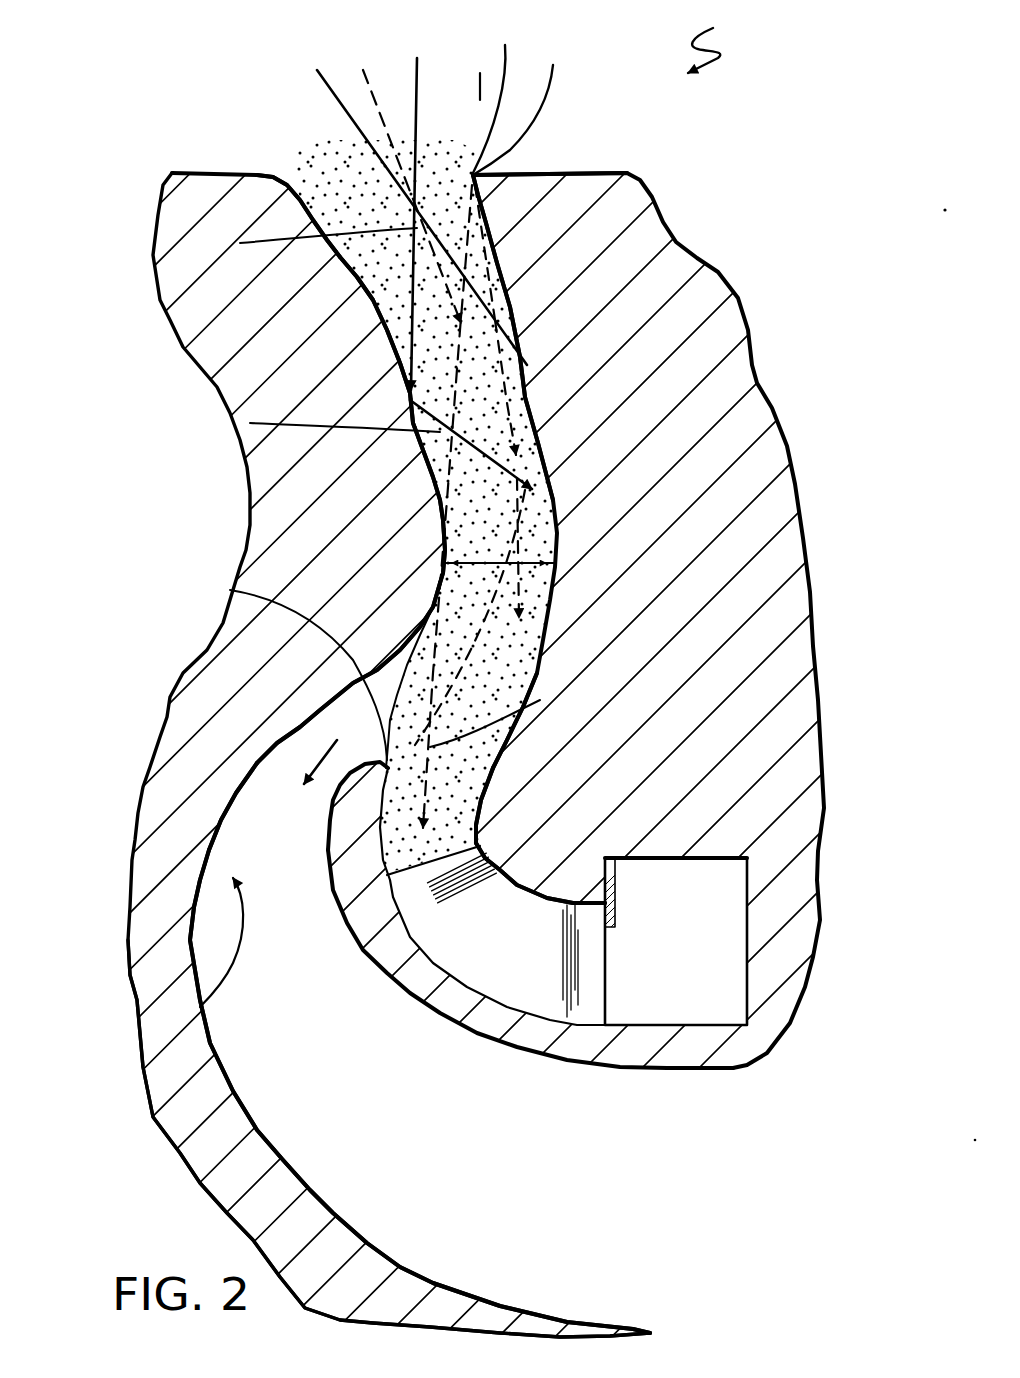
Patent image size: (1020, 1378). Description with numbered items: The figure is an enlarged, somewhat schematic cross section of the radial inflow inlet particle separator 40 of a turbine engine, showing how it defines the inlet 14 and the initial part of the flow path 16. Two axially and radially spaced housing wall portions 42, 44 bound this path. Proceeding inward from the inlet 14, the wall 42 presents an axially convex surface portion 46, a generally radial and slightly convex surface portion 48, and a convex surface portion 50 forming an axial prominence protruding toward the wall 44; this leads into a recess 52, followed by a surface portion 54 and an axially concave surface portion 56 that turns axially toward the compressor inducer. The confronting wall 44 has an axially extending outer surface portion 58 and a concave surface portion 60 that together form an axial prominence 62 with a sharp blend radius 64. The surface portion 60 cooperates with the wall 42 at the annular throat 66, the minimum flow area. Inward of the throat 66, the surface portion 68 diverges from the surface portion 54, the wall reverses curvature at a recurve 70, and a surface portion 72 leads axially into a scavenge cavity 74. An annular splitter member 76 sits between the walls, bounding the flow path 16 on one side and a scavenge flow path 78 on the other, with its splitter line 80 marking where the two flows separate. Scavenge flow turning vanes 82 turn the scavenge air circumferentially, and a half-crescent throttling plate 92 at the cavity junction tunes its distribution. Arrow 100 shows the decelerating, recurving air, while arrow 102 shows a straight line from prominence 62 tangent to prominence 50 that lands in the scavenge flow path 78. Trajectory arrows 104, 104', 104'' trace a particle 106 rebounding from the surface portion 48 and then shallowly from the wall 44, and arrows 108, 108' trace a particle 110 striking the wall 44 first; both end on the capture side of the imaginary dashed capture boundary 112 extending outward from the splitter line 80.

The inlet 14 is at (328, 132).
The flow path 16 is at (466, 1143).
The inlet particle separator 40 is at (725, 39).
The wall portion 42 is at (183, 184).
The wall portion 44 is at (573, 193).
The axially convex surface portion 46 is at (282, 186).
The slightly axially convex surface portion 48 is at (373, 302).
The axially convex surface portion 50 is at (443, 533).
The recess 52 is at (200, 1003).
The surface portion 54 is at (260, 765).
The axially concave surface portion 56 is at (205, 856).
The axially extending radially outwardly disposed surface portion 58 is at (550, 173).
The concave or conical surface portion 60 is at (497, 253).
The axial prominence 62 is at (523, 100).
The blend radius 64 is at (493, 89).
The annular throat 66 is at (483, 577).
The surface portion 68 is at (515, 732).
The recurve 70 is at (470, 808).
The surface portion 72 is at (541, 900).
The scavenge cavity 74 is at (676, 941).
The splitter member 76 is at (415, 990).
The scavenge flow path 78 is at (503, 935).
The splitter line 80 is at (357, 687).
The scavenge flow turning vanes 82 is at (405, 895).
The throttling plate 92 is at (613, 873).
The arrow 100 is at (230, 590).
The arrow 102 is at (540, 700).
The trajectory arrow 104 is at (234, 243).
The trajectory arrow 104' is at (313, 444).
The trajectory arrow 104'' is at (575, 540).
The particle 106 is at (512, 637).
The trajectory arrow 108 is at (554, 257).
The trajectory arrow 108' is at (579, 365).
The particle 110 is at (523, 468).
The capture boundary 112 is at (364, 70).